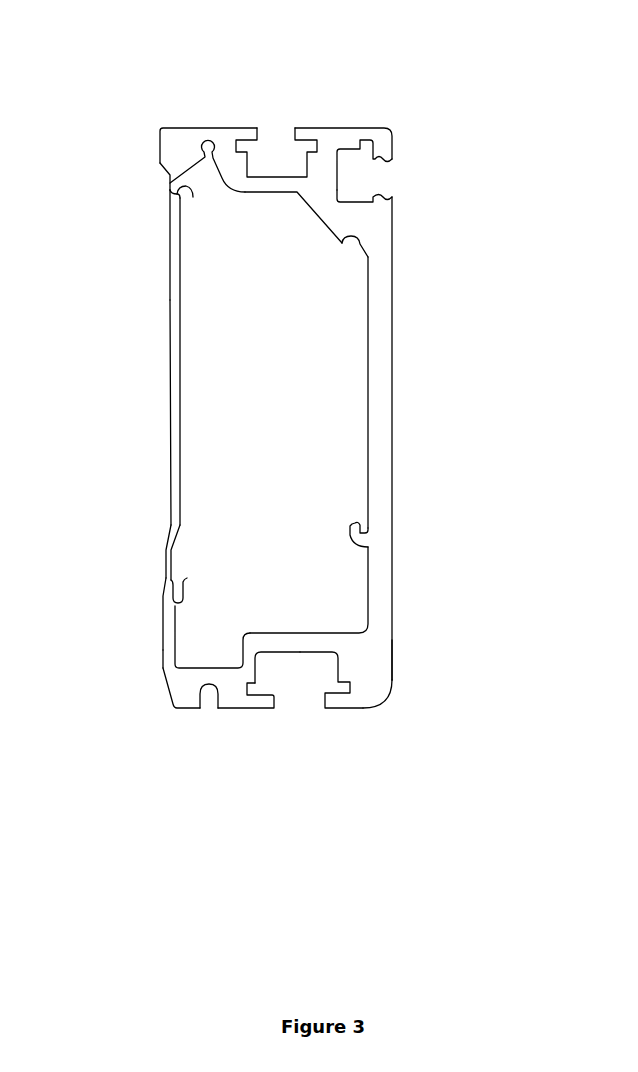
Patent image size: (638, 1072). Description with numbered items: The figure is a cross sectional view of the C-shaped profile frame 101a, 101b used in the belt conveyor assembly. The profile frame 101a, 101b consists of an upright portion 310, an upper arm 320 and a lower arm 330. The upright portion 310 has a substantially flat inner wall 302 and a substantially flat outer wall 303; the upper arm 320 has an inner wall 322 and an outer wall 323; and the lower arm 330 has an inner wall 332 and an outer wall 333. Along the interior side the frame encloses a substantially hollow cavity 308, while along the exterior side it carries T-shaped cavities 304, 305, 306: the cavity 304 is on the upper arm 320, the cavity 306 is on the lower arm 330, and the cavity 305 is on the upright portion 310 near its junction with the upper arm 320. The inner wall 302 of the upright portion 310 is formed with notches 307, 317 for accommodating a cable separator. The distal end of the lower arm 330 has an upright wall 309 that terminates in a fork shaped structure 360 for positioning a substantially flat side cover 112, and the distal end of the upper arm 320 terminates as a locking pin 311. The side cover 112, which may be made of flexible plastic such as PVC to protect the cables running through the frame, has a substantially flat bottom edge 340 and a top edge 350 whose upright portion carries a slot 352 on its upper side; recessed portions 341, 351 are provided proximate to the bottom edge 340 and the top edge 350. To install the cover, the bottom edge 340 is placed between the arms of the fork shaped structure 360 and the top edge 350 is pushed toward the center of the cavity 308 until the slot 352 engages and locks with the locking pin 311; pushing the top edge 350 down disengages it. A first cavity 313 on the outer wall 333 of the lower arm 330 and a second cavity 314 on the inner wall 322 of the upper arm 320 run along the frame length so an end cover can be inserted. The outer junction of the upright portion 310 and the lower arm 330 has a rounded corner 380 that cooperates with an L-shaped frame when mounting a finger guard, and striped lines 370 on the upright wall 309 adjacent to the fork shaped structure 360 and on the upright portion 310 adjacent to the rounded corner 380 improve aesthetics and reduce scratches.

The profile frame 101a is at (465, 817).
The profile frame 101b is at (395, 776).
The side cover 112 is at (167, 332).
The inner wall 302 is at (320, 371).
The outer wall 303 is at (394, 371).
The T-shaped cavity 304 is at (277, 153).
The T-shaped cavity 305 is at (363, 187).
The T-shaped cavity 306 is at (300, 690).
The notch 307 is at (355, 523).
The hollow cavity 308 is at (251, 450).
The upright wall 309 is at (168, 633).
The upright portion 310 is at (380, 440).
The locking pin 311 is at (163, 183).
The first cavity 313 is at (203, 704).
The second cavity 314 is at (200, 142).
The notch 317 is at (342, 245).
The upper arm 320 is at (342, 138).
The inner wall 322 is at (271, 193).
The outer wall 323 is at (304, 126).
The lower arm 330 is at (236, 685).
The inner wall 332 is at (318, 633).
The outer wall 333 is at (284, 686).
The bottom edge 340 is at (184, 580).
The recessed portion 341 is at (162, 550).
The top edge 350 is at (193, 197).
The recessed portion 351 is at (168, 230).
The slot 352 is at (173, 194).
The fork shaped structure 360 is at (173, 610).
The striped lines 370 is at (165, 647).
The rounded corner 380 is at (391, 690).